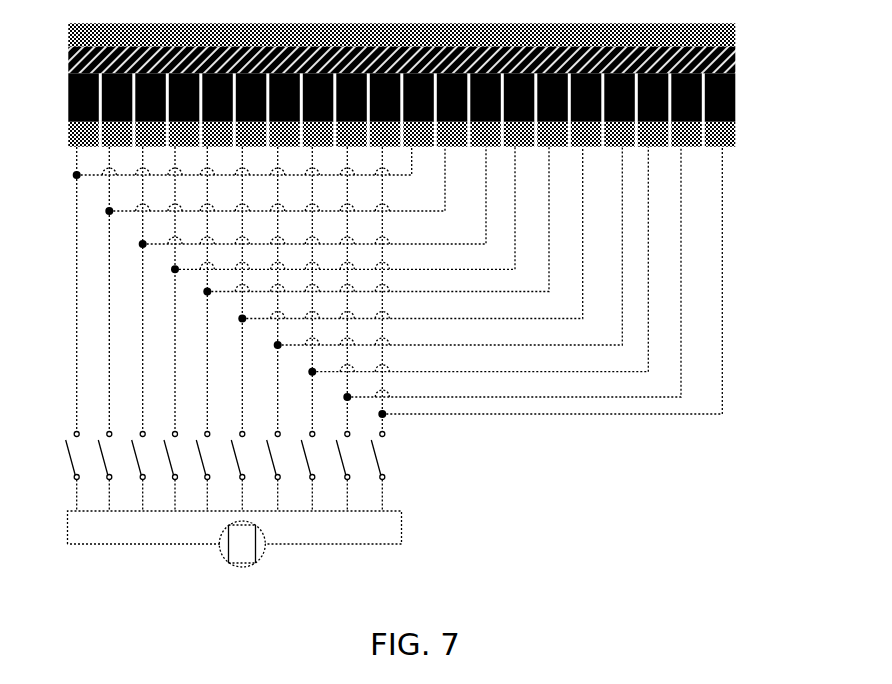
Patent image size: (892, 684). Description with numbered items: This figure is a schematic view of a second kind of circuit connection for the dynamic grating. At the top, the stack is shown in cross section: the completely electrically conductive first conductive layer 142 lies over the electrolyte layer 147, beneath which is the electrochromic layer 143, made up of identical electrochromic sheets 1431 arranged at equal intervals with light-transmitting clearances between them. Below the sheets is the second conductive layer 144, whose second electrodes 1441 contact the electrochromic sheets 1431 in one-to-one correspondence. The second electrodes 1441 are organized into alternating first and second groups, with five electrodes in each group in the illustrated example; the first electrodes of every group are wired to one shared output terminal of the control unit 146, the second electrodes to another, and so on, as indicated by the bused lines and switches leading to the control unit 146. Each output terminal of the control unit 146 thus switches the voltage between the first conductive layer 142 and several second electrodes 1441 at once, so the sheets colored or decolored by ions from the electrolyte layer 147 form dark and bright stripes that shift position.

The first conductive layer 142 is at (736, 38).
The electrolyte layer 147 is at (736, 64).
The electrochromic layer 143 is at (413, 97).
The electrochromic sheet 1431 is at (67, 91).
The second conductive layer 144 is at (417, 134).
The second electrode 1441 is at (68, 130).
The control unit 146 is at (403, 531).